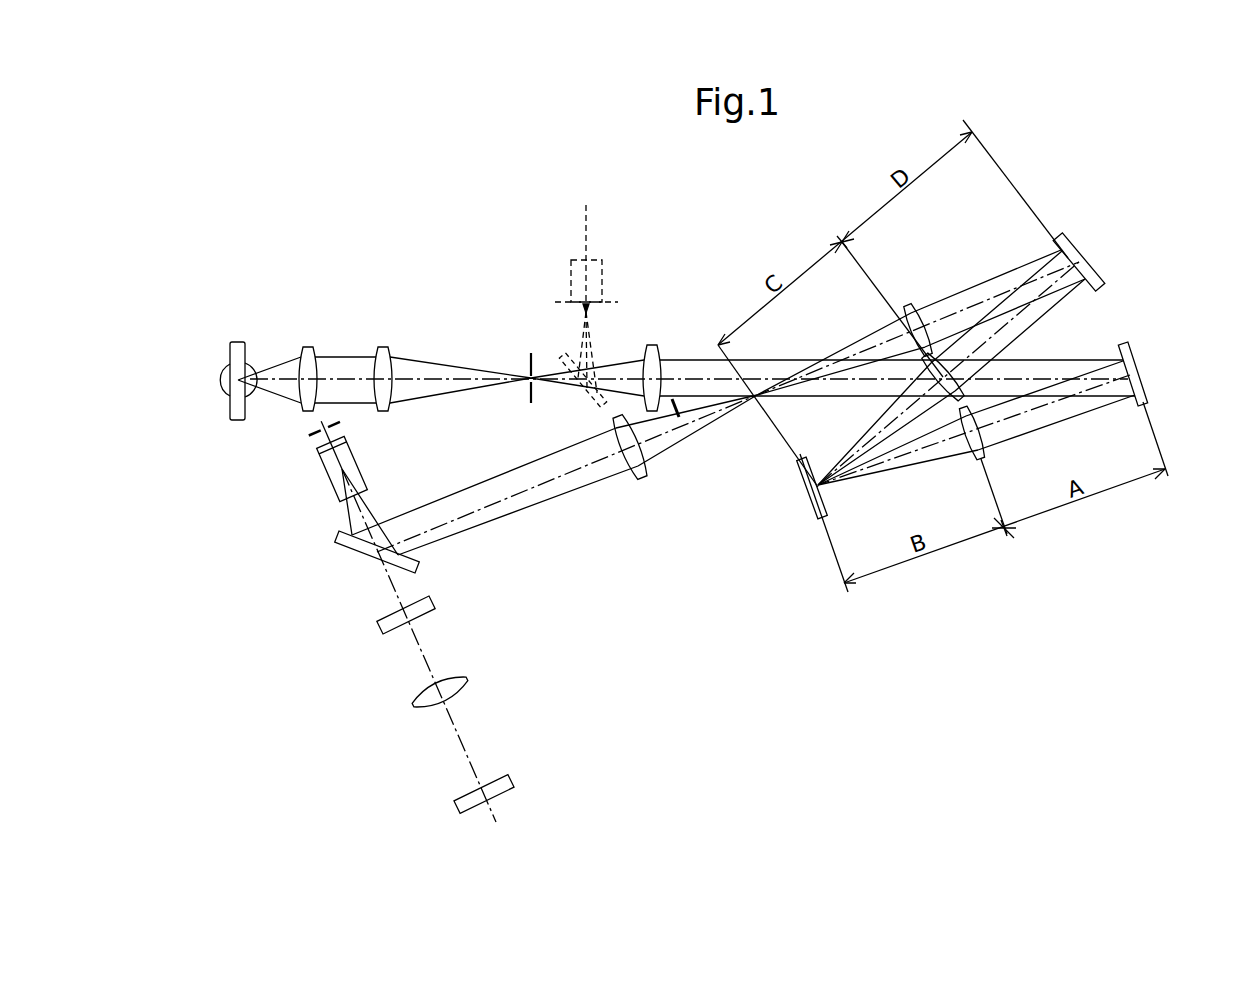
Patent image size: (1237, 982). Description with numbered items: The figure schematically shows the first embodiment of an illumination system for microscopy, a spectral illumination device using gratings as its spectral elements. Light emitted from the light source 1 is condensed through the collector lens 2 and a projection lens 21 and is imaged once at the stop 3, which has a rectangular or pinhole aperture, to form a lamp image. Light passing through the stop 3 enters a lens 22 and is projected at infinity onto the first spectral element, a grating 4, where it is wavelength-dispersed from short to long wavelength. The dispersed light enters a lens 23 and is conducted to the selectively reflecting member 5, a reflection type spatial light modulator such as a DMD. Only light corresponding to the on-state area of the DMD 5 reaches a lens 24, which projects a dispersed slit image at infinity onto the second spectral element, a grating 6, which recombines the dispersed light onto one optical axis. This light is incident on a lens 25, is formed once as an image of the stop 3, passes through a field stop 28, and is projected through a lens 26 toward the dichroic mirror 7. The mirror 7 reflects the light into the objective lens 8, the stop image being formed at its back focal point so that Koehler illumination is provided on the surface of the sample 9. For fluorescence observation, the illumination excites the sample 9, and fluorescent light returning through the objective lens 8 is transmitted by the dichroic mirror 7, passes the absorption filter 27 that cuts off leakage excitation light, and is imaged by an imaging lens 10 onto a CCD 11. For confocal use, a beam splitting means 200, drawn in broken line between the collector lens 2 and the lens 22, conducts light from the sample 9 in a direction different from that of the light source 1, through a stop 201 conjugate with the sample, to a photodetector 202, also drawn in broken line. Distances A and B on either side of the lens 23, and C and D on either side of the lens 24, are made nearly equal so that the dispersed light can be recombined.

The light source 1 is at (238, 342).
The collector lens 2 is at (310, 352).
The projection lens 21 is at (384, 352).
The stop 3 is at (532, 356).
The photodetector 202 is at (571, 295).
The stop 201 is at (612, 300).
The beam splitting means 200 is at (590, 404).
The lens 22 is at (653, 350).
The first spectral element 4 is at (1131, 345).
The selectively reflecting member 5 is at (808, 515).
The second spectral element 6 is at (1080, 255).
The lens 23 is at (978, 455).
The lens 24 is at (950, 366).
The lens 25 is at (918, 318).
The field stop 28 is at (679, 418).
The lens 26 is at (630, 472).
The dichroic mirror 7 is at (367, 568).
The objective lens 8 is at (330, 498).
The sample 9 is at (310, 440).
The absorption filter 27 is at (432, 605).
The imaging lens 10 is at (462, 685).
The image sensor 11 is at (500, 795).